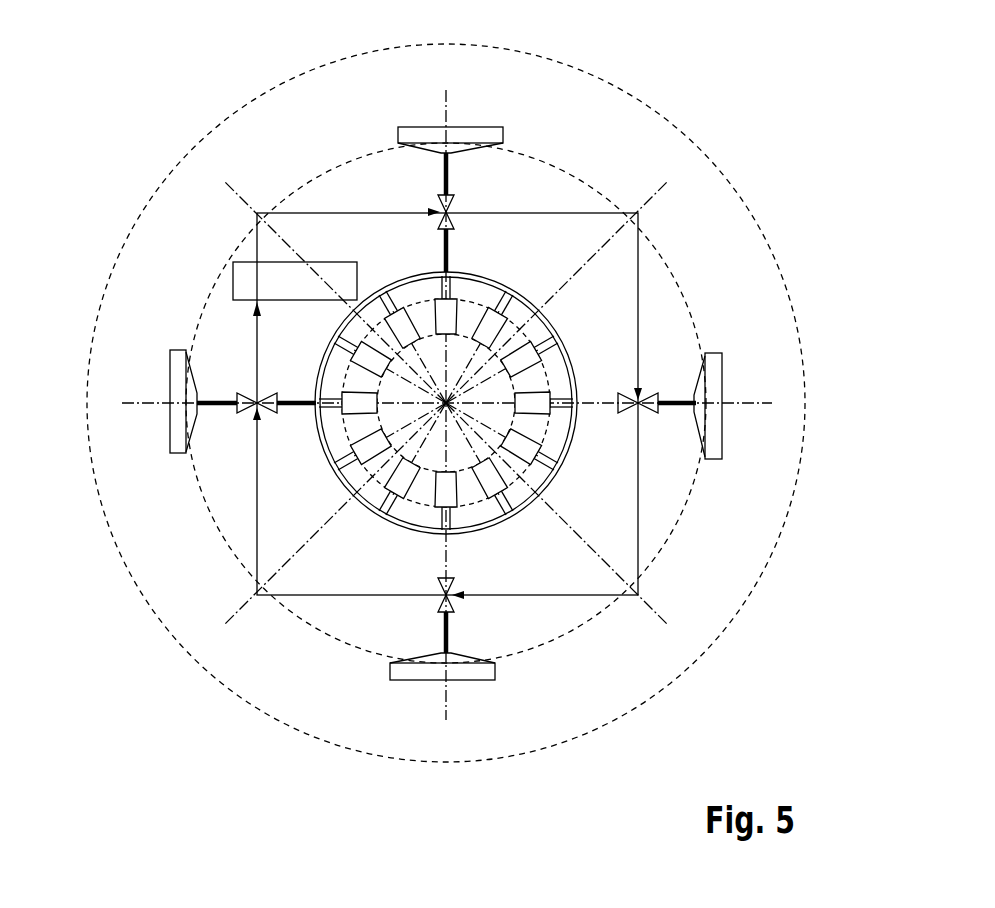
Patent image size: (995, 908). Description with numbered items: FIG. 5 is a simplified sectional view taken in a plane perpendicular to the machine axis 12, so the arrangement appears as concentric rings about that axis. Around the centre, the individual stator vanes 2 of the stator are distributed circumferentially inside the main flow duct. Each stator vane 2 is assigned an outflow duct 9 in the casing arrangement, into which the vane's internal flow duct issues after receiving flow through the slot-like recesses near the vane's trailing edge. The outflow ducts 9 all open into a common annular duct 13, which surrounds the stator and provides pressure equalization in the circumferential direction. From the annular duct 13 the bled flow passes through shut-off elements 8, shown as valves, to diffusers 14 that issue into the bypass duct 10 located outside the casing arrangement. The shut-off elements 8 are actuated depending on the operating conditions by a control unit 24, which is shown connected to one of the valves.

The stator vane 2 is at (497, 322).
The shut-off element 8 is at (648, 397).
The outflow duct 9 is at (402, 526).
The bypass duct 10 is at (657, 143).
The machine axis 12 is at (446, 402).
The annular duct 13 is at (476, 526).
The diffuser 14 is at (172, 390).
The control unit 24 is at (233, 282).